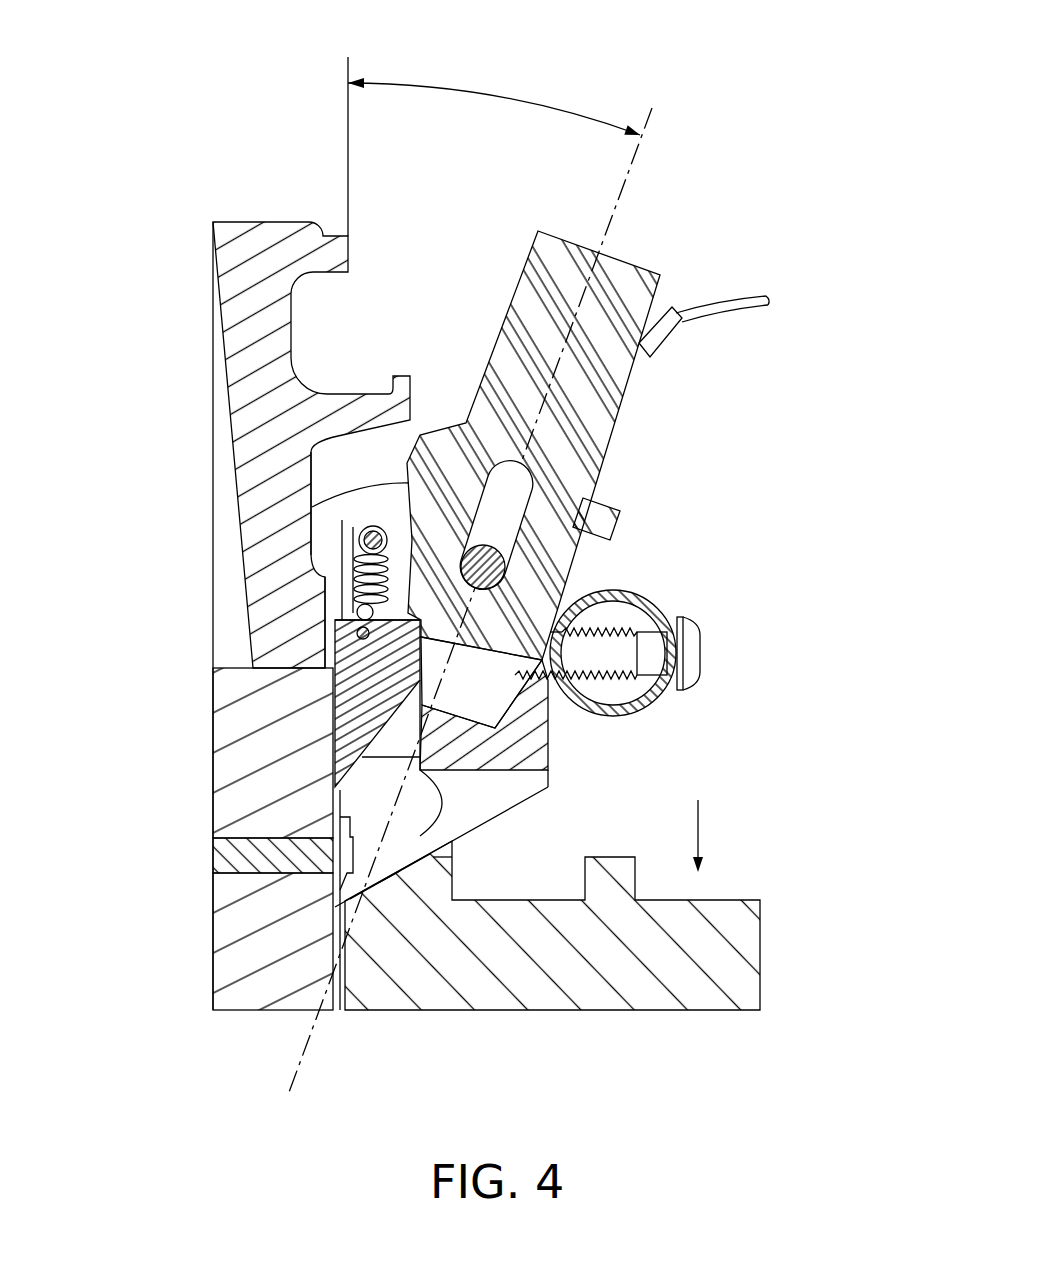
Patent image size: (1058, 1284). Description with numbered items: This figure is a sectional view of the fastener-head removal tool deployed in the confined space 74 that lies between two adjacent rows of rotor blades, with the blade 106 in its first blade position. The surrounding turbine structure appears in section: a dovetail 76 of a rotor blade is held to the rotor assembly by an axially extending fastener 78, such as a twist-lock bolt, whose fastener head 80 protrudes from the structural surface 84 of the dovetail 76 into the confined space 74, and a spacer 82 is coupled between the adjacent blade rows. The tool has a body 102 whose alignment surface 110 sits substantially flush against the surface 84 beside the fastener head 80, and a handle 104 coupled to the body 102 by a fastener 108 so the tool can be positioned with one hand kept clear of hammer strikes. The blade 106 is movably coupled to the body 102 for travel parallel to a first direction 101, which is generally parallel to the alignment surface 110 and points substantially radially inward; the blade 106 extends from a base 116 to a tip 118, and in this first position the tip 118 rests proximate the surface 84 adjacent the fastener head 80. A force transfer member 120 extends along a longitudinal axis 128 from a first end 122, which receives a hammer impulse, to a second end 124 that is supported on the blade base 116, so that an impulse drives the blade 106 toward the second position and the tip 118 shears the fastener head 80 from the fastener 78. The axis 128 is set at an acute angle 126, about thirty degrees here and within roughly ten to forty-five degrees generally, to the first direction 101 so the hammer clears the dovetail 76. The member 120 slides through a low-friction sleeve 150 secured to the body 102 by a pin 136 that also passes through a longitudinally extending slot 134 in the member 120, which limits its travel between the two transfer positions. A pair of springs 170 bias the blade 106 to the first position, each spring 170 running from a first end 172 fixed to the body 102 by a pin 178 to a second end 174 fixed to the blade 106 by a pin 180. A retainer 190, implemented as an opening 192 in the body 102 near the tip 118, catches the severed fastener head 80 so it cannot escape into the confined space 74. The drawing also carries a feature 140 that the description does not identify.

The confined space 74 is at (446, 289).
The dovetail 76 is at (286, 458).
The fastener 78 is at (235, 850).
The fastener head 80 is at (330, 878).
The spacer 82 is at (652, 1012).
The structural surface 84 is at (322, 592).
The first direction 101 is at (700, 822).
The body 102 is at (483, 798).
The handle 104 is at (612, 592).
The blade 106 is at (367, 710).
The fastener 108 is at (699, 655).
The alignment surface 110 is at (318, 791).
The base 116 is at (325, 621).
The tip 118 is at (335, 772).
The force transfer member 120 is at (576, 307).
The first end 122 is at (595, 234).
The second end 124 is at (498, 654).
The acute angle 126 is at (502, 95).
The longitudinal axis 128 is at (652, 118).
The slot 134 is at (527, 478).
The pin 136 is at (612, 508).
The gap 140 is at (316, 522).
The sleeve 150 is at (502, 560).
The spring 170 is at (353, 580).
The first end 172 is at (360, 532).
The second end 174 is at (357, 636).
The pin 178 is at (348, 514).
The pin 180 is at (352, 622).
The retainer 190 is at (392, 885).
The opening 192 is at (390, 876).